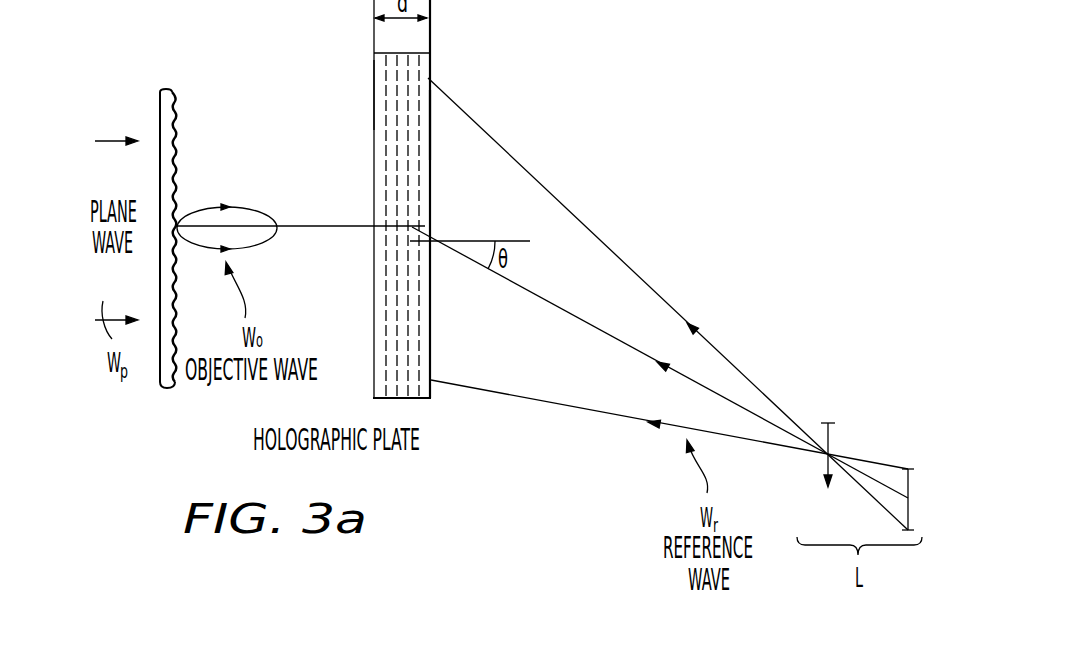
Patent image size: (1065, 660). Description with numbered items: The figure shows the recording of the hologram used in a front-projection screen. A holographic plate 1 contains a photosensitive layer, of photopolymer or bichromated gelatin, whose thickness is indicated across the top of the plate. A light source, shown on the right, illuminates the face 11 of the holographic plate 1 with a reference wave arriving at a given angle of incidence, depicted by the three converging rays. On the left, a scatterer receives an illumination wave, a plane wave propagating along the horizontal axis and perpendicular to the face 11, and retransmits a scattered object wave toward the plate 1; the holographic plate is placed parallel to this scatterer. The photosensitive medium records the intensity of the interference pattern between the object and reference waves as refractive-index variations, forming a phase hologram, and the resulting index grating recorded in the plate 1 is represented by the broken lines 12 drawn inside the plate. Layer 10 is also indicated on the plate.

The holographic plate 1 is at (174, 100).
The photosensitive layer surface 10 is at (437, 118).
The face of the holographic plate 11 is at (366, 95).
The broken lines representing the index grating 12 is at (378, 388).